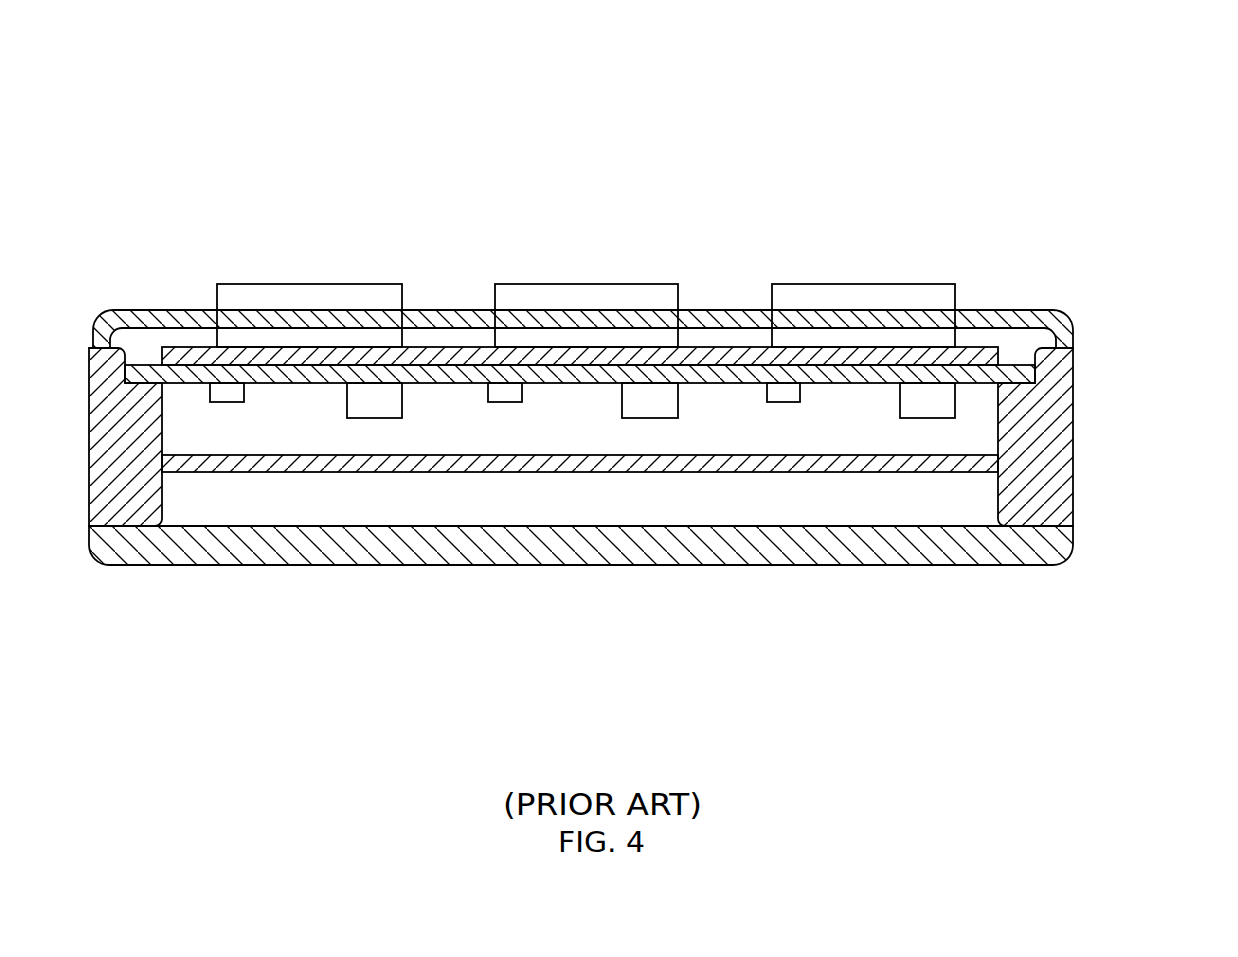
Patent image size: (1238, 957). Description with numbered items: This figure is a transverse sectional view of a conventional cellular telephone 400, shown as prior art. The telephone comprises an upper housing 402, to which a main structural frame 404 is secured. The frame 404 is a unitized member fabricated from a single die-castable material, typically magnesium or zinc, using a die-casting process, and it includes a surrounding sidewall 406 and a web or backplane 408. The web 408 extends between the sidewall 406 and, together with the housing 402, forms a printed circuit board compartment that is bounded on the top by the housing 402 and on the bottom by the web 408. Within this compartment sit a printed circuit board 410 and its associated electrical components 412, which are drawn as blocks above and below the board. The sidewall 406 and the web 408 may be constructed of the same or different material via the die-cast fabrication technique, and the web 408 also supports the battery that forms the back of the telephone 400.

The conventional cellular telephone 400 is at (1088, 90).
The upper housing 402 is at (1030, 310).
The main structural frame 404 is at (1100, 421).
The surrounding sidewall 406 is at (90, 421).
The web 408 is at (365, 470).
The printed circuit board 410 is at (213, 382).
The electrical components 412 is at (353, 385).